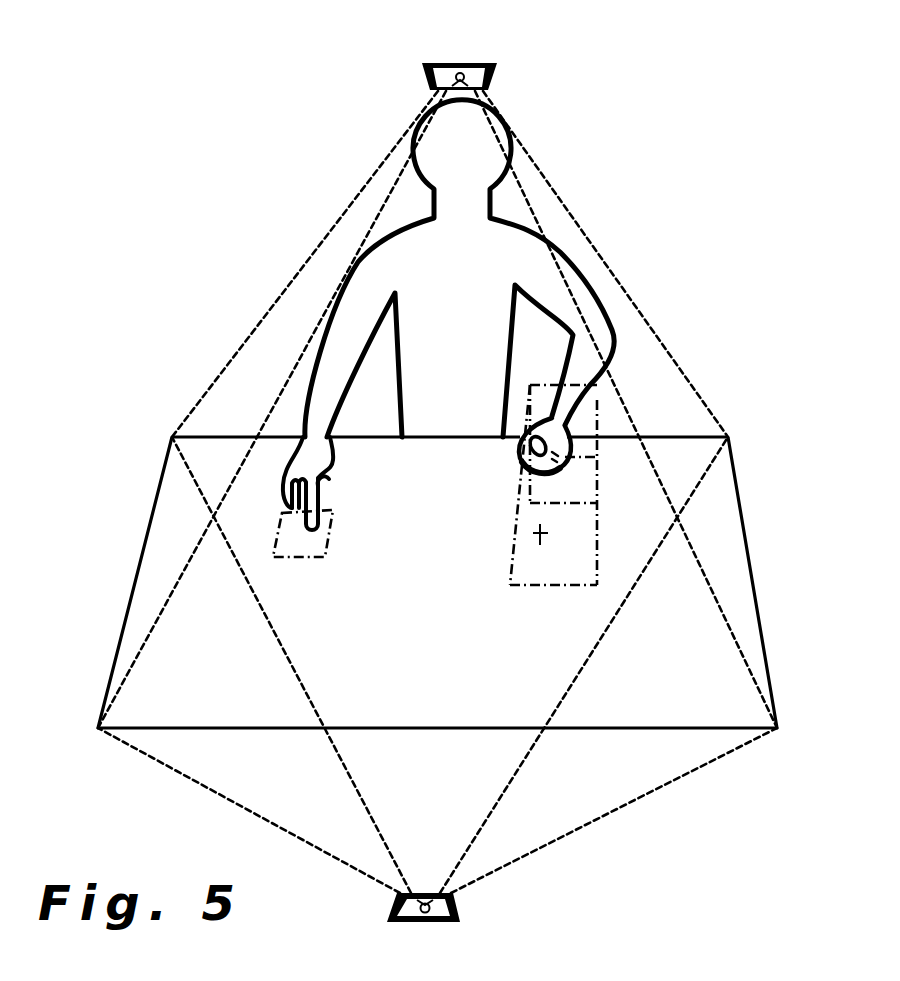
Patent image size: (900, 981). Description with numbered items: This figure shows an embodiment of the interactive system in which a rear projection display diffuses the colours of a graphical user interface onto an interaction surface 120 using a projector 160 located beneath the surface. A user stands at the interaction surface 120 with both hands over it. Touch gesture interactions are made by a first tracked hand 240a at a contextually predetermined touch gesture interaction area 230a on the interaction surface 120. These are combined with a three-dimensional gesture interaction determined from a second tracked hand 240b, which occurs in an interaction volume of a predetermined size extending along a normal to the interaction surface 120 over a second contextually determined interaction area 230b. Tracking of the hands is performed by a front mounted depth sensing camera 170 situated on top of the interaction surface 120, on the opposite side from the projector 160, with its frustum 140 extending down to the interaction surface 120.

The interaction surface 120 is at (752, 568).
The frustum 140 is at (645, 374).
The projector 160 is at (458, 912).
The front mounted depth sensing camera 170 is at (408, 70).
The touch gesture interaction area 230a is at (268, 526).
The second contextually determined interaction area 230b is at (598, 583).
The first tracked hand 240a is at (297, 508).
The second tracked hand 240b is at (562, 445).